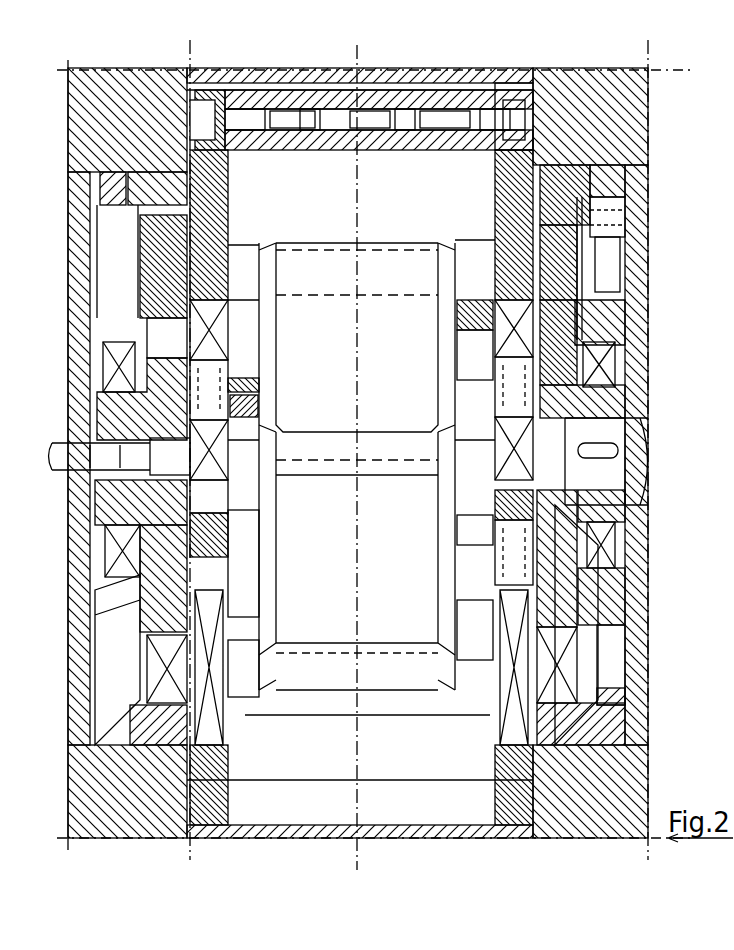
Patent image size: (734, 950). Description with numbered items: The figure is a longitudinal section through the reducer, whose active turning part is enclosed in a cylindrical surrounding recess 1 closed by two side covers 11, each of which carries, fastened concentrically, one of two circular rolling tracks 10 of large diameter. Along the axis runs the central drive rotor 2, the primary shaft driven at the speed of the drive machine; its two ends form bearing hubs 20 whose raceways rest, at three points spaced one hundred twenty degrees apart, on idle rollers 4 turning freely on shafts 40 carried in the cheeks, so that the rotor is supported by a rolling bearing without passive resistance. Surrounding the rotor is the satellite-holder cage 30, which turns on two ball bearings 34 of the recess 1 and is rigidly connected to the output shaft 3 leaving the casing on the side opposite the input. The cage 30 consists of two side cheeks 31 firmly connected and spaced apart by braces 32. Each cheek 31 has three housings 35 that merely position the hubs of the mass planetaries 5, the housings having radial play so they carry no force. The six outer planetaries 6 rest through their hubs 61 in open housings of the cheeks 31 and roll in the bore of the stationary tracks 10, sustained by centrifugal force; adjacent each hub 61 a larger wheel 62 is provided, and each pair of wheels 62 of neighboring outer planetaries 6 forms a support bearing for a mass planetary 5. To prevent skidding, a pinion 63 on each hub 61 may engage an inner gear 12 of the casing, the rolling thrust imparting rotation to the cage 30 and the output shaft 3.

The cylindrical surrounding recess 1 is at (248, 48).
The central drive rotor 2 is at (60, 450).
The output shaft 3 is at (630, 482).
The idle rollers 4 is at (140, 600).
The mass planetaries 5 is at (557, 657).
The outer planetaries 6 is at (605, 744).
The circular rolling tracks 10 is at (187, 757).
The side covers 11 is at (138, 85).
The inner gear 12 is at (625, 187).
The bearing hubs 20 is at (100, 527).
The satellite-holder cage 30 is at (420, 95).
The side cheeks 31 is at (138, 147).
The braces 32 is at (331, 100).
The ball bearings 34 is at (110, 357).
The housings 35 is at (580, 305).
The shafts 40 is at (605, 547).
The hubs 61 is at (165, 667).
The wheel 62 is at (187, 772).
The pinion 63 is at (625, 217).